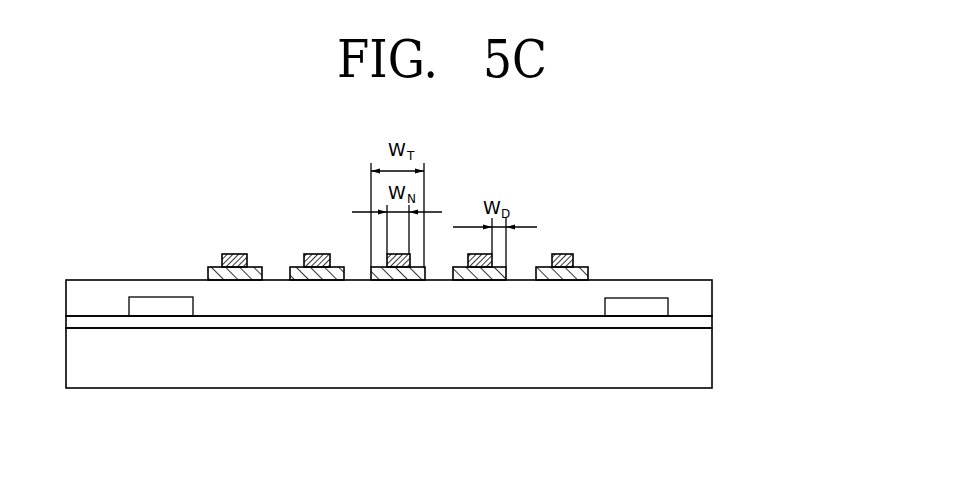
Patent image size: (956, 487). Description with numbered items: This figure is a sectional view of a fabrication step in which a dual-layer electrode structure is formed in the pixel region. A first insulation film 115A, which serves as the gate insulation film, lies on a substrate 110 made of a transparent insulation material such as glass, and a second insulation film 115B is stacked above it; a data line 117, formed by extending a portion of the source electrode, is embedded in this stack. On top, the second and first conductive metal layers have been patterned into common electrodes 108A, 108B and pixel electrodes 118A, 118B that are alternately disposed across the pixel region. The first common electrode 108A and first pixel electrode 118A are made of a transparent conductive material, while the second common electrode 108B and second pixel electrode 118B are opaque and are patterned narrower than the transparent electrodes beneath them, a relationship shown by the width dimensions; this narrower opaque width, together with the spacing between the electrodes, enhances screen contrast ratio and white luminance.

The substrate 110 is at (702, 357).
The first insulation film 115A is at (702, 322).
The second insulation film 115B is at (702, 297).
The data line 117 is at (161, 310).
The first common electrode 108A is at (233, 280).
The second common electrode 108B is at (233, 254).
The first pixel electrode 118A is at (314, 280).
The second pixel electrode 118B is at (316, 254).